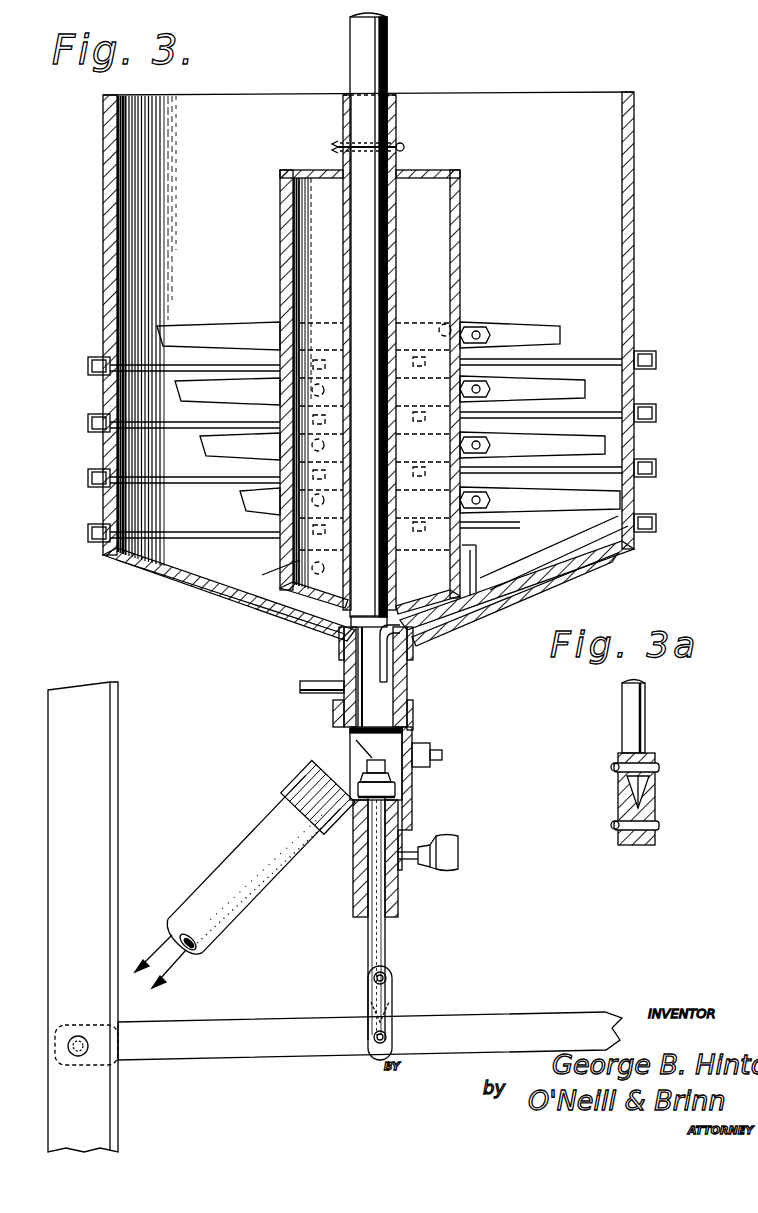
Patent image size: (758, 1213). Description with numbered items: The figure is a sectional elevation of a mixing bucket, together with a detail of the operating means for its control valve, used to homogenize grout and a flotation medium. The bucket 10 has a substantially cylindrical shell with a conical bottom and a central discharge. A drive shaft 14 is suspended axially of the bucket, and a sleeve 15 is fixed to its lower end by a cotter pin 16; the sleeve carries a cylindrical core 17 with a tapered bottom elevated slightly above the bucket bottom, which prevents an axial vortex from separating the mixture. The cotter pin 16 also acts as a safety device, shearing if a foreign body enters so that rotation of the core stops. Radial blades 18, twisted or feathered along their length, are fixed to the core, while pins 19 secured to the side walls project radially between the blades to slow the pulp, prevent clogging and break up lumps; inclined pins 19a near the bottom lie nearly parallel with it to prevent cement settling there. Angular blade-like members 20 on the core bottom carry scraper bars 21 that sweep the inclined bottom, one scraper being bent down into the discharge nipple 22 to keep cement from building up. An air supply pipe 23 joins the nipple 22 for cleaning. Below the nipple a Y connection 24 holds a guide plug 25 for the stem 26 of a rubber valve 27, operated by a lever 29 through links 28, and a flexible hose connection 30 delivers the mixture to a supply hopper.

In FIG. 3, the bucket 10 is at (634, 239).
In FIG. 3, the drive shaft 14 is at (373, 61).
In FIG. 3, the sleeve 15 is at (397, 127).
In FIG. 3, the cotter pin 16 is at (405, 148).
In FIG. 3, the core 17 is at (460, 231).
In FIG. 3, the radial blades 18 is at (515, 388).
In FIG. 3, the pins 19 is at (590, 410).
In FIG. 3, the inclined pins 19a is at (292, 588).
In FIG. 3, the angular blade-like members 20 is at (318, 622).
In FIG. 3, the scraper bars 21 is at (345, 633).
In FIG. 3, the discharge nipple 22 is at (408, 683).
In FIG. 3, the air supply pipe 23 is at (305, 696).
In FIG. 3, the Y connection 24 is at (412, 735).
In FIG. 3, the plug 25 is at (413, 808).
In FIG. 3, the valve stem 26 is at (370, 877).
In FIG. 3A, the valve stem 26 is at (646, 727).
In FIG. 3, the valve 27 is at (397, 782).
In FIG. 3, the links 28 is at (393, 995).
In FIG. 3A, the links 28 is at (656, 792).
In FIG. 3, the lever 29 is at (466, 1026).
In FIG. 3A, the lever 29 is at (620, 838).
In FIG. 3, the flexible hose connection 30 is at (266, 878).